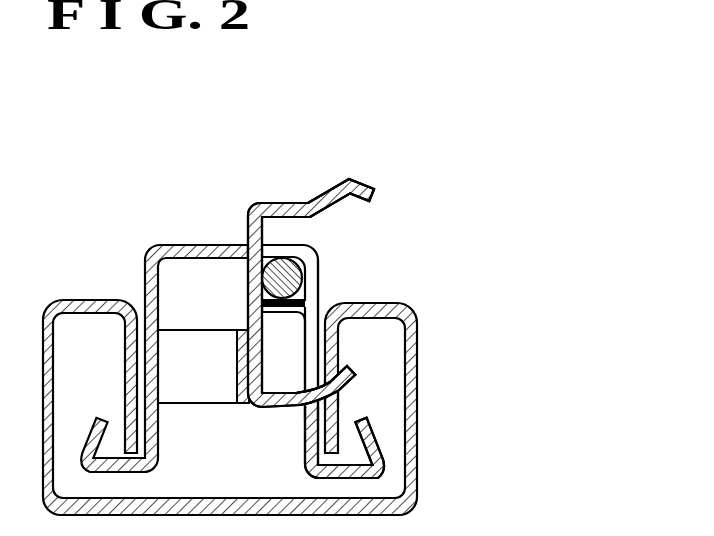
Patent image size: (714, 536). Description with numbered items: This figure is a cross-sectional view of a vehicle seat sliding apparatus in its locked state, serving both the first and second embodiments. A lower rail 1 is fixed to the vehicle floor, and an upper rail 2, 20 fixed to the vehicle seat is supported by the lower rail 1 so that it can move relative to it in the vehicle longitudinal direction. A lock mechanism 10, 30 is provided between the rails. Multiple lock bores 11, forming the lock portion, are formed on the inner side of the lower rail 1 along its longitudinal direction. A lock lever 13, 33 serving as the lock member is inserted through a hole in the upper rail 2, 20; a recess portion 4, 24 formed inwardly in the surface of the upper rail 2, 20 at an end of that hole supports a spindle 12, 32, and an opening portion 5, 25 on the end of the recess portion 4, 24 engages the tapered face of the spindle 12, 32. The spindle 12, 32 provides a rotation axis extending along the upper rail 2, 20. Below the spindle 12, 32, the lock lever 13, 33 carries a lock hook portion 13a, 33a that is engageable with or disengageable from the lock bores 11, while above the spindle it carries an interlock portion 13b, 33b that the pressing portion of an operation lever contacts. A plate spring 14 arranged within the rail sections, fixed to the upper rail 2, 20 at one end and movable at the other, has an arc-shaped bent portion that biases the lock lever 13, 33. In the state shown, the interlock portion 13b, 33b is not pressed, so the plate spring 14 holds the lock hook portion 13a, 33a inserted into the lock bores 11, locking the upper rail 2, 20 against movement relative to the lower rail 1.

The lower rail 1 is at (414, 401).
The upper rail 2 is at (164, 319).
The upper rail 20 is at (163, 245).
The recess portion 4 is at (360, 361).
The recess portion 24 is at (312, 286).
The opening portion 5 is at (362, 337).
The opening portion 25 is at (310, 258).
The lock mechanism 10 is at (411, 265).
The lock mechanism 30 is at (379, 265).
The lock bore 11 is at (340, 353).
The spindle 12 is at (364, 265).
The spindle 32 is at (303, 268).
The lock lever 13 is at (288, 270).
The lock lever 33 is at (256, 207).
The lock hook portion 13a is at (426, 376).
The lock hook portion 33a is at (358, 369).
The interlock portion 13b is at (400, 170).
The interlock portion 33b is at (353, 178).
The plate spring 14 is at (233, 406).